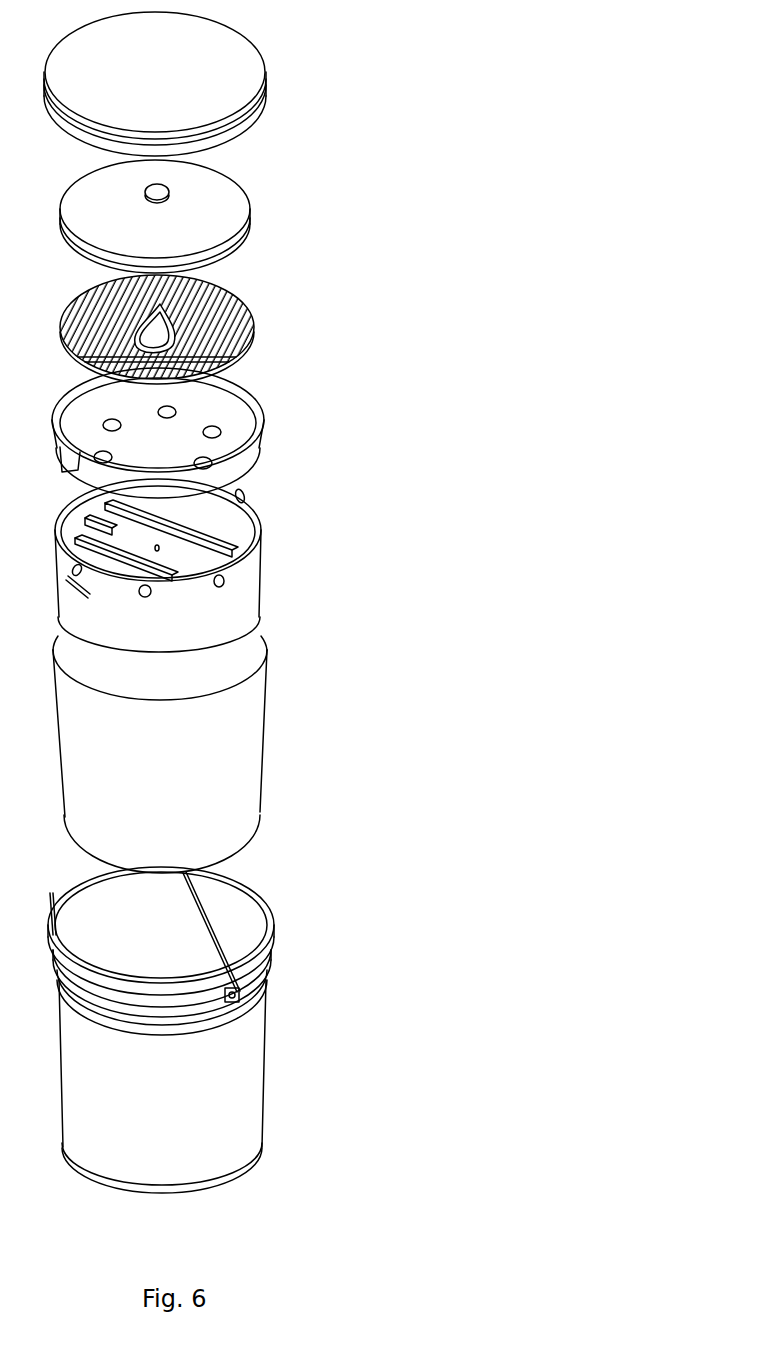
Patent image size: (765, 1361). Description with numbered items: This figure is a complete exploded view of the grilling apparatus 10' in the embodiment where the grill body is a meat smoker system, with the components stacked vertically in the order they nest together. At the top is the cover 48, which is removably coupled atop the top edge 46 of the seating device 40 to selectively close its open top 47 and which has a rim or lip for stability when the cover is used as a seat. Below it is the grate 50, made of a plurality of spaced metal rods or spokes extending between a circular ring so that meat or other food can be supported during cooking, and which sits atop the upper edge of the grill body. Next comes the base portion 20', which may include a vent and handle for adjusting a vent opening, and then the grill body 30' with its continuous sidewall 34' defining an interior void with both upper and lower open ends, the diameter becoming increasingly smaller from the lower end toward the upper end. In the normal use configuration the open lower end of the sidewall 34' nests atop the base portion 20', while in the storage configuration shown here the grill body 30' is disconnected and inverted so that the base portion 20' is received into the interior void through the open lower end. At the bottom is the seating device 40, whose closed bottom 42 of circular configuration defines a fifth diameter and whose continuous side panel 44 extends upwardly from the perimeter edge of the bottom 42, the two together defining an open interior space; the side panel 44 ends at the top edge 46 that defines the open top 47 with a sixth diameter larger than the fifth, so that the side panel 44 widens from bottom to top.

The grilling apparatus 10' is at (325, 631).
The cover 48 is at (218, 43).
The grate 50 is at (233, 305).
The base portion 20' is at (239, 565).
The grill body 30' is at (238, 754).
The continuous sidewall 34' is at (160, 733).
The open top 47 is at (230, 882).
The top edge 46 is at (272, 910).
The seating device 40 is at (228, 1103).
The continuous side panel 44 is at (215, 1108).
The bottom 42 is at (237, 1173).